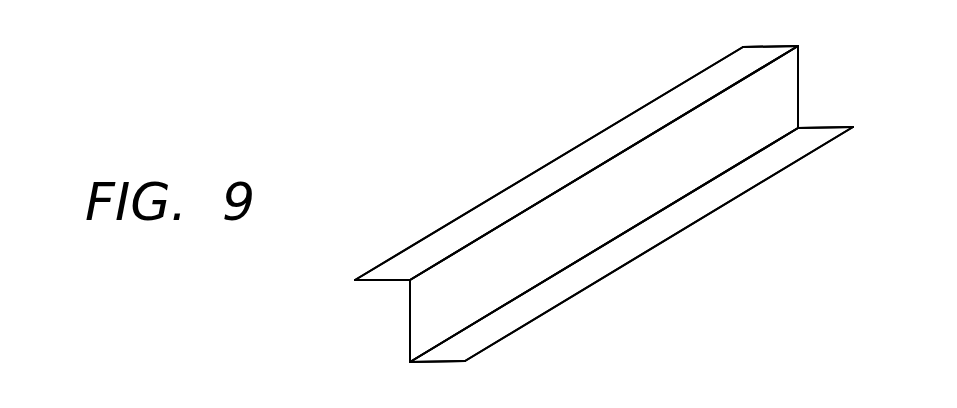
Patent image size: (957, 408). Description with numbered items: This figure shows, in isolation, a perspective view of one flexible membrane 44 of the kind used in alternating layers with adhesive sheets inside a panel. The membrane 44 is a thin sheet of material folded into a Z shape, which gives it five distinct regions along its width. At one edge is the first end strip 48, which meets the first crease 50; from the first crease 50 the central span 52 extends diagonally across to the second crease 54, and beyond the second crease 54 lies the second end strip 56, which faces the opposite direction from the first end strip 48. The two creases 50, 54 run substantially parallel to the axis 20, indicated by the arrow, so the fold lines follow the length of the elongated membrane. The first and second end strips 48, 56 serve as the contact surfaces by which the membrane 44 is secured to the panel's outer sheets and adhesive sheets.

The flexible membrane 44 is at (527, 147).
The first end strip 48 is at (475, 227).
The first crease 50 is at (720, 97).
The span 52 is at (693, 140).
The second crease 54 is at (652, 218).
The second end strip 56 is at (495, 327).
The axis 20 is at (902, 247).